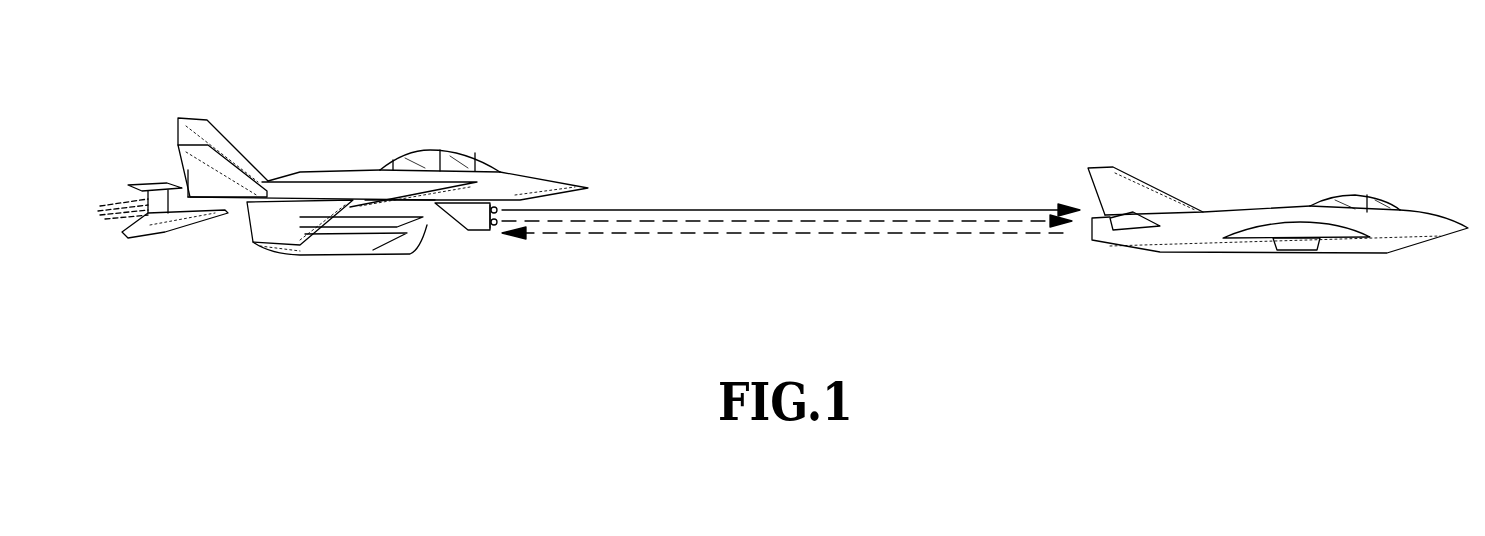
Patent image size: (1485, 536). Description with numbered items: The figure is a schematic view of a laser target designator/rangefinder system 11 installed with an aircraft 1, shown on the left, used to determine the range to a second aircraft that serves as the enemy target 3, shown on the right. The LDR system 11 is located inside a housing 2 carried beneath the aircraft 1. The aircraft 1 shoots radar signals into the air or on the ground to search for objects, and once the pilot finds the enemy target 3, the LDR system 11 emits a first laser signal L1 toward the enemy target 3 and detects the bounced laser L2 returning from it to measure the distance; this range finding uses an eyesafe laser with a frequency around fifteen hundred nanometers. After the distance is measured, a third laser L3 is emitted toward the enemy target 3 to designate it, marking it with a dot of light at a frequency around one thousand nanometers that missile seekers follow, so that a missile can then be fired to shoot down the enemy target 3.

The aircraft 1 is at (430, 152).
The housing 2 is at (450, 215).
The laser target designator/rangefinder (LDR) system 11 is at (483, 236).
The enemy target 3 is at (1352, 193).
The first laser signal L1 is at (888, 220).
The bounced laser L2 is at (862, 234).
The third laser L3 is at (760, 209).